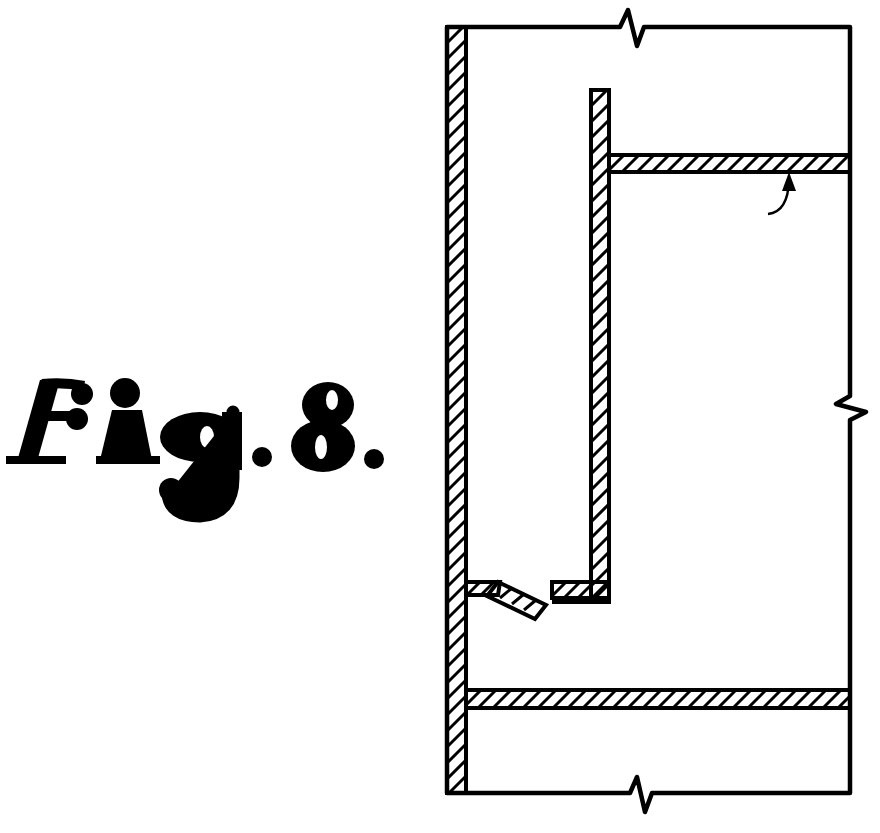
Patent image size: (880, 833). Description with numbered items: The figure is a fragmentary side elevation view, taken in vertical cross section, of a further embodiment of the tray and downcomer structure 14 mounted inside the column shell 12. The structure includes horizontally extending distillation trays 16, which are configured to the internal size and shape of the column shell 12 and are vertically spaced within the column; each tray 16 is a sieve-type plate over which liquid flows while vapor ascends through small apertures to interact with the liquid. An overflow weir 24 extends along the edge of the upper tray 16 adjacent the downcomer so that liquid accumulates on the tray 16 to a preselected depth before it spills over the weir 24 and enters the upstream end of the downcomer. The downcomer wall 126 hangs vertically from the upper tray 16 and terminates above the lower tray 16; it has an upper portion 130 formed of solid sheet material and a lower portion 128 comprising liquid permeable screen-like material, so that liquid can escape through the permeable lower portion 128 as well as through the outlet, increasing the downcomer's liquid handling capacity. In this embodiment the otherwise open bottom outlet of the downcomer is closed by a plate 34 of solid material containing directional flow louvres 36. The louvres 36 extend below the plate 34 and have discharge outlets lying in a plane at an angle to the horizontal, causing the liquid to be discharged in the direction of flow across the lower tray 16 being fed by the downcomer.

The column shell 12 is at (447, 153).
The tray and downcomer structure 14 is at (757, 202).
The distillation tray 16 is at (712, 155).
The overflow weir 24 is at (607, 106).
The plate 34 is at (588, 600).
The directional flow louvres 36 is at (512, 600).
The downcomer wall 126 is at (609, 352).
The lower portion 128 is at (570, 603).
The upper portion 130 is at (609, 257).